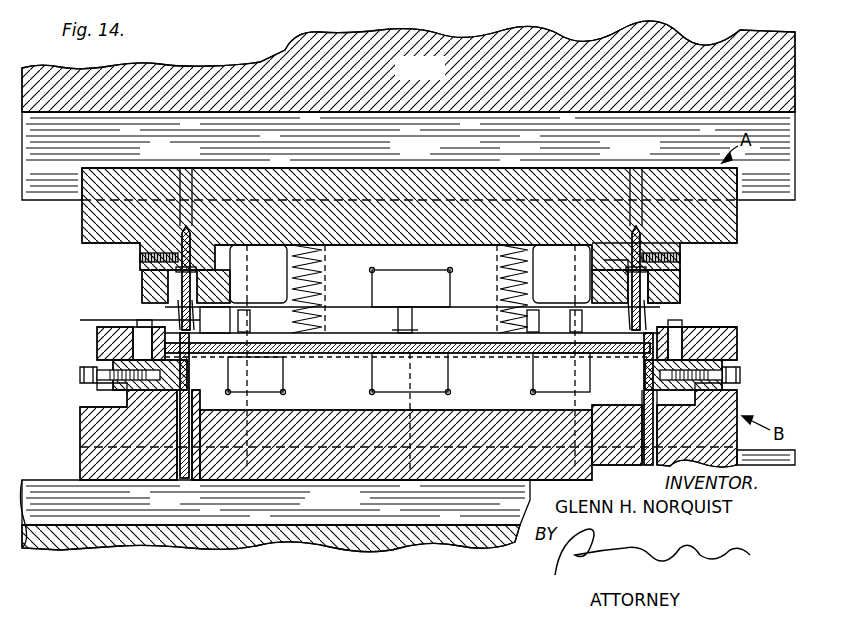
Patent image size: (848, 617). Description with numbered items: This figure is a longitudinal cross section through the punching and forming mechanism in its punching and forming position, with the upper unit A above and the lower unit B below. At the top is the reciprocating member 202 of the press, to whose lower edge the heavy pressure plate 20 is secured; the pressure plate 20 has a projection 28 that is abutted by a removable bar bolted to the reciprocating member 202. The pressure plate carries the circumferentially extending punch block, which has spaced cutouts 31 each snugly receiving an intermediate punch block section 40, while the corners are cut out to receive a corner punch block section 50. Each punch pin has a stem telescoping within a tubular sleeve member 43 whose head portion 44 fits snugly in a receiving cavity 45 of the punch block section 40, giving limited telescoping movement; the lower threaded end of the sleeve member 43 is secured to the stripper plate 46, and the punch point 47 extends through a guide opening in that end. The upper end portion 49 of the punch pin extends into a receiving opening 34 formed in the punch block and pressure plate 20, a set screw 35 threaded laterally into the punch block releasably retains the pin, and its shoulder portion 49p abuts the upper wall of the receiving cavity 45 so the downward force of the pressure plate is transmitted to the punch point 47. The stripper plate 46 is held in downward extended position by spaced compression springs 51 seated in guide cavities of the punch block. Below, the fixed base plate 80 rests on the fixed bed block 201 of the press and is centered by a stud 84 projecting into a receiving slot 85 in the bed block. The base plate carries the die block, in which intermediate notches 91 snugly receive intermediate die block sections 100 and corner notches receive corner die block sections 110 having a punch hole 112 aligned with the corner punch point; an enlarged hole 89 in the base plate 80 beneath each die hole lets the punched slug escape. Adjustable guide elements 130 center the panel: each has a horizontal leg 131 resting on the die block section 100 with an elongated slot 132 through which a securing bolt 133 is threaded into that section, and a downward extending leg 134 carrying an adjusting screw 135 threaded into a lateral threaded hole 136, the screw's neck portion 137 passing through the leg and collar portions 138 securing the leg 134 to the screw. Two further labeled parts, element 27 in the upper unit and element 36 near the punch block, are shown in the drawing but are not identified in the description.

The pressure plate 20 is at (419, 202).
The press ram 27 is at (578, 133).
The projection 28 is at (517, 170).
The cutouts 31 is at (406, 268).
The receiving opening 34 is at (638, 235).
The set screw 35 is at (612, 208).
The guide pin 36 is at (183, 188).
The intermediate punch block section 40 is at (142, 285).
The tubular sleeve member 43 is at (177, 307).
The head portion 44 is at (624, 275).
The receiving cavity 45 is at (672, 285).
The stripper plate 46 is at (213, 337).
The punch point 47 is at (251, 326).
The upper end portion 49 is at (178, 233).
The shoulder portion 49p is at (193, 262).
The corner punch block section 50 is at (279, 283).
The compression spring 51 is at (326, 322).
The fixed base plate 80 is at (455, 430).
The stud 84 is at (312, 482).
The receiving slot 85 is at (212, 520).
The enlarged hole 89 is at (178, 480).
The intermediate notches 91 is at (372, 390).
The intermediate die block section 100 is at (240, 372).
The corner die block section 110 is at (283, 362).
The punch hole 112 is at (617, 435).
The adjustable guide element 130 is at (90, 328).
The horizontal leg 131 is at (718, 332).
The elongated slot 132 is at (133, 337).
The securing bolt 133 is at (133, 322).
The downward extending leg 134 is at (97, 352).
The adjusting screw 135 is at (97, 373).
The threaded hole 136 is at (408, 435).
The neck portion 137 is at (103, 387).
The collar portions 138 is at (770, 360).
The fixed bed block 201 is at (437, 540).
The reciprocating member 202 is at (408, 66).